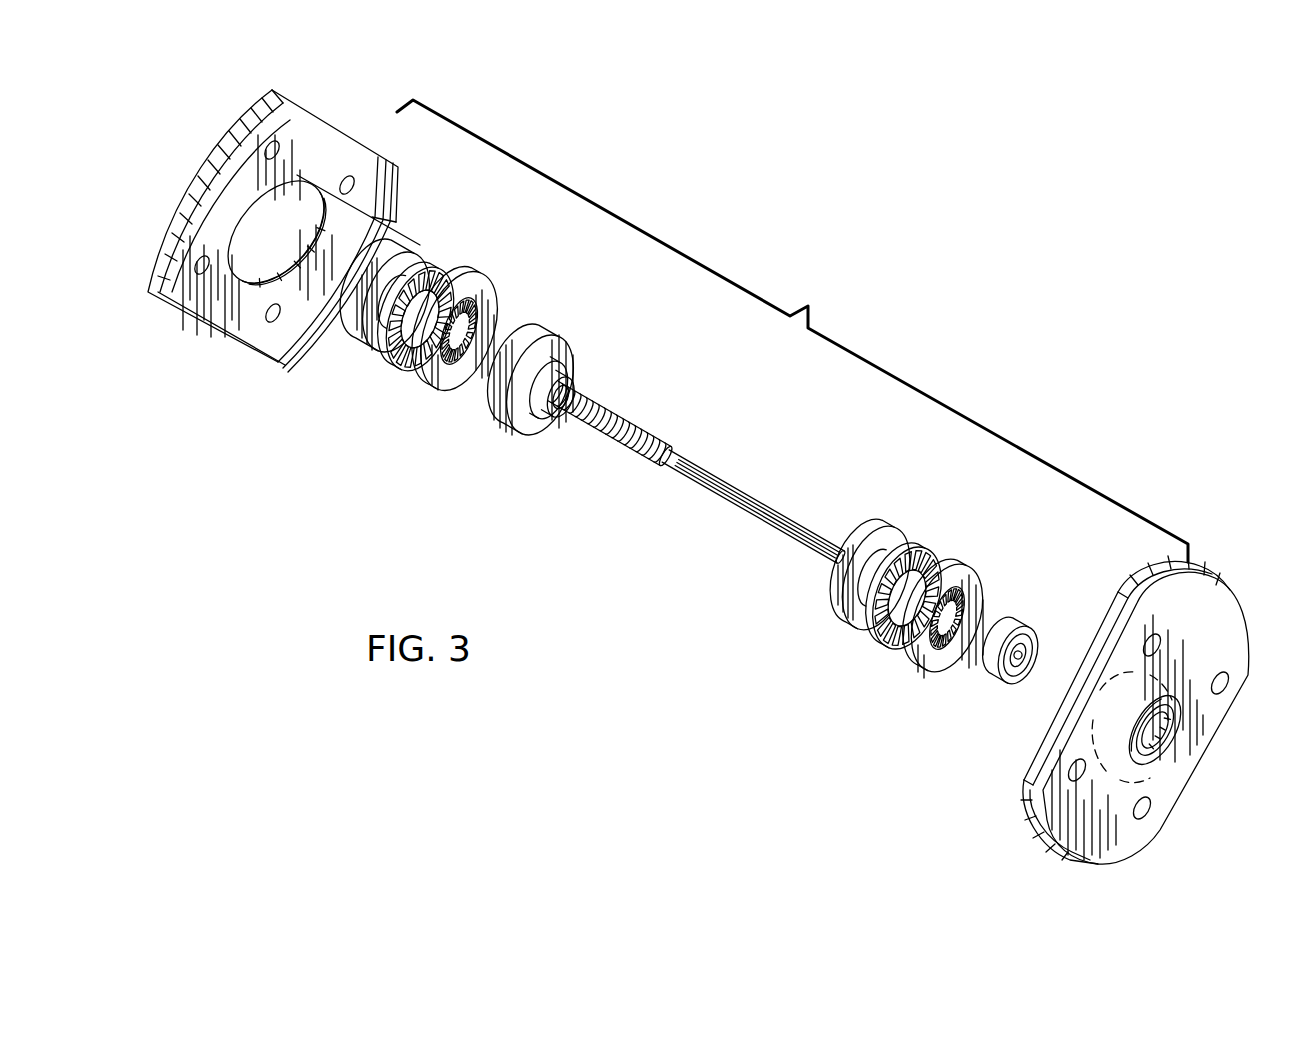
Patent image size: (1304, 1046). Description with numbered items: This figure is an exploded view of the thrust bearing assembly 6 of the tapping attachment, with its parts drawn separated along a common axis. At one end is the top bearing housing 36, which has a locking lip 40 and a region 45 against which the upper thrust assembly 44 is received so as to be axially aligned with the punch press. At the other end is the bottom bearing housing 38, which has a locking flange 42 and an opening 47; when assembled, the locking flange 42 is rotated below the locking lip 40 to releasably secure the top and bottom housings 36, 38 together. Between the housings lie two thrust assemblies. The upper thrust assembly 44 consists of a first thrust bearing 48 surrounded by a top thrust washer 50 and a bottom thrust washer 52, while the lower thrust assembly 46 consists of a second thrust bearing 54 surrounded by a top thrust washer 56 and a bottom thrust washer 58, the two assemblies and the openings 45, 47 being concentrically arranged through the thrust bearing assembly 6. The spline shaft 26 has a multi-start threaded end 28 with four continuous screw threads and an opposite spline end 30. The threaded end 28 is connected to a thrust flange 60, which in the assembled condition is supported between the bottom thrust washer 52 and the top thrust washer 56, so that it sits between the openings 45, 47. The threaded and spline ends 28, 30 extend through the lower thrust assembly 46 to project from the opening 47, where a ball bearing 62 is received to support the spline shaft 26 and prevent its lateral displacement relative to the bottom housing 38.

The thrust bearing assembly 6 is at (792, 331).
The spline shaft 26 is at (697, 480).
The threaded end 28 is at (650, 472).
The spline end 30 is at (764, 515).
The top bearing housing 36 is at (269, 209).
The bottom bearing housing 38 is at (1126, 710).
The locking lip 40 is at (208, 197).
The locking flange 42 is at (1218, 600).
The upper thrust assembly 44 is at (441, 337).
The region 45 is at (238, 203).
The lower thrust assembly 46 is at (879, 605).
The opening 47 is at (1120, 762).
The first thrust bearing 48 is at (392, 368).
The top thrust washer 50 is at (370, 356).
The bottom thrust washer 52 is at (445, 376).
The second thrust bearing 54 is at (856, 630).
The top thrust washer 56 is at (832, 606).
The bottom thrust washer 58 is at (916, 656).
The thrust flange 60 is at (522, 420).
The ball bearing 62 is at (1030, 622).